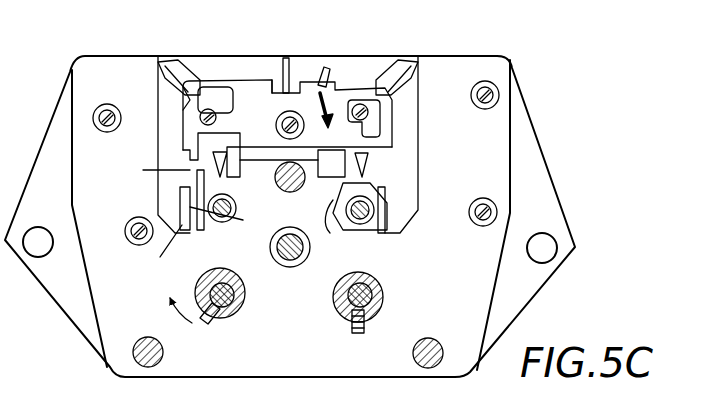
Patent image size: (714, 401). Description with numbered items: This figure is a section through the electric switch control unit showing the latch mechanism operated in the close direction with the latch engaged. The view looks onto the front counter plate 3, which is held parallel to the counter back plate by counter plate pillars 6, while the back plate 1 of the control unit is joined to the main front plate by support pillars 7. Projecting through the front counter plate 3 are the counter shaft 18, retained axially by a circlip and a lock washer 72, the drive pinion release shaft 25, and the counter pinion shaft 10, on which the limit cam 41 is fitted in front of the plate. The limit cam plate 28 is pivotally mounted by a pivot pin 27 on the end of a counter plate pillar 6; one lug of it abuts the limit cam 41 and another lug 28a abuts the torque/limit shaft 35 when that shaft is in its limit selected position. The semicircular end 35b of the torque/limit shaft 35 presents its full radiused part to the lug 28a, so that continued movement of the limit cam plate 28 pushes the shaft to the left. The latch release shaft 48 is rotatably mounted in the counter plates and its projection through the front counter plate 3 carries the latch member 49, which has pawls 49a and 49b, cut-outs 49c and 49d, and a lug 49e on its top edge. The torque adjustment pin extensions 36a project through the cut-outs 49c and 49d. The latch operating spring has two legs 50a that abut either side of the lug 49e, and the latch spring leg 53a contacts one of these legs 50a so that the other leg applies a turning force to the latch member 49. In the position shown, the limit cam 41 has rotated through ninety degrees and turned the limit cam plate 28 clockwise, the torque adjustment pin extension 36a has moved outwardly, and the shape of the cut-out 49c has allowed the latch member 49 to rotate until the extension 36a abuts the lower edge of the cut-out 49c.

The back plate of the control unit 1 is at (553, 203).
The front counter plate 3 is at (465, 287).
The counter plate pillars 6 is at (101, 129).
The support pillars 7 is at (137, 347).
The counter pinion shaft 10 is at (387, 255).
The counter shaft 18 is at (335, 300).
The drive pinion release shaft 25 is at (290, 267).
The pivot pin 27 is at (163, 67).
The limit cam plate 28 is at (165, 87).
The lug 28a is at (250, 185).
The torque/limit shaft 35 is at (425, 165).
The semicircular end of the torque/limit shaft 35b is at (160, 178).
The torque adjustment pin extension 36a is at (197, 110).
The limit cam 41 is at (164, 255).
The latch release shaft 48 is at (279, 120).
The latch member 49 is at (197, 78).
The pawl 49a is at (195, 160).
The pawl 49b is at (473, 180).
The cut-out 49c is at (222, 83).
The cut-out 49d is at (368, 113).
The lug 49e is at (292, 84).
The latch operating spring legs 50a is at (283, 72).
The latch spring leg 53a is at (326, 67).
The lock washer 72 is at (235, 321).